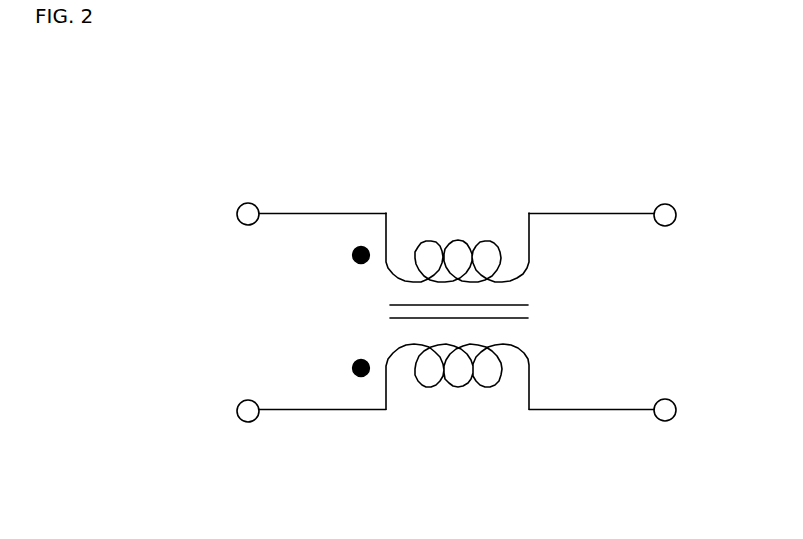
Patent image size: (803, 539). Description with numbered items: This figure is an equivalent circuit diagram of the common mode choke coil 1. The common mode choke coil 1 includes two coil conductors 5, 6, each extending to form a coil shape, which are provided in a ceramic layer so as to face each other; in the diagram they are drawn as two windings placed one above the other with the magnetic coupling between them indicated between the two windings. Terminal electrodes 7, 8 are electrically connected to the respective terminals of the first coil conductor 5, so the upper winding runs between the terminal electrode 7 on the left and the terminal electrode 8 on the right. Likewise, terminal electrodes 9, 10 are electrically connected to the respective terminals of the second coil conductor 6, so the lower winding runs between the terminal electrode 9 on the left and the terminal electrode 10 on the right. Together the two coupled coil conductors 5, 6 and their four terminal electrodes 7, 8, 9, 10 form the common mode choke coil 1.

The common mode choke coil 1 is at (350, 98).
The first coil conductor 5 is at (465, 238).
The second coil conductor 6 is at (455, 387).
The terminal electrode 7 is at (248, 203).
The terminal electrode 8 is at (665, 204).
The terminal electrode 9 is at (247, 422).
The terminal electrode 10 is at (665, 421).